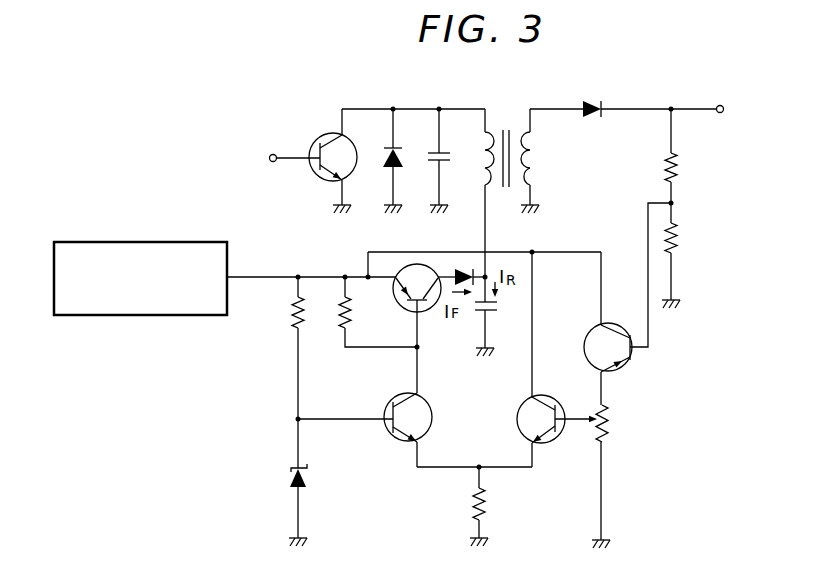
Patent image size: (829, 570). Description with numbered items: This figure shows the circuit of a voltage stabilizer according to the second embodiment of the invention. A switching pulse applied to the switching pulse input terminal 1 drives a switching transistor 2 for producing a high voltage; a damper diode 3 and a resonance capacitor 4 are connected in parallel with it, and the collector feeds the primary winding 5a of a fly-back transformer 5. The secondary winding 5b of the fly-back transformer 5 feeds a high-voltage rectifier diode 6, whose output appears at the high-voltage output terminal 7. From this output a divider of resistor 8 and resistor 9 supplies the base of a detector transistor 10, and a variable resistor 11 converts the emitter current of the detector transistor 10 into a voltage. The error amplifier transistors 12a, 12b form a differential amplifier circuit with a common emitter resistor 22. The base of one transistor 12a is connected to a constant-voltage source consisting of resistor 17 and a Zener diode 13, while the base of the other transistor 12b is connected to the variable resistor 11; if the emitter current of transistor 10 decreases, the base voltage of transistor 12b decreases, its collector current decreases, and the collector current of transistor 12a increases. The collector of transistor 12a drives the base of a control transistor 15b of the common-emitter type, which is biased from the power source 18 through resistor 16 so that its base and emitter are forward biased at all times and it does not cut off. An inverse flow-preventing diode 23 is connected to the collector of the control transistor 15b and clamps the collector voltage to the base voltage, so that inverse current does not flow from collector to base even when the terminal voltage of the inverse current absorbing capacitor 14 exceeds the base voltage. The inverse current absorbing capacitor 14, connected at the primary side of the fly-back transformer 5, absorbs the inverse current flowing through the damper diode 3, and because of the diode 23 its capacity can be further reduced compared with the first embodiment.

The switching pulse input terminal 1 is at (271, 154).
The switching transistor 2 is at (323, 133).
The damper diode 3 is at (388, 153).
The resonance capacitor 4 is at (436, 151).
The fly-back transformer 5 is at (515, 151).
The primary winding 5a is at (489, 155).
The secondary winding 5b is at (531, 159).
The high-voltage rectifier diode 6 is at (594, 102).
The high-voltage output terminal 7 is at (720, 105).
The resistor 8 is at (677, 158).
The resistor 9 is at (681, 227).
The detector transistor 10 is at (627, 363).
The variable resistor 11 is at (613, 412).
The error amplifier transistor 12a is at (424, 398).
The error amplifier transistor 12b is at (519, 405).
The Zener diode 13 is at (290, 477).
The inverse current absorbing capacitor 14 is at (473, 312).
The control transistor 15b is at (392, 289).
The resistor 16 is at (337, 310).
The resistor 17 is at (290, 315).
The power source 18 is at (181, 242).
The resistor 22 is at (467, 503).
The inverse flow-preventing diode 23 is at (461, 268).